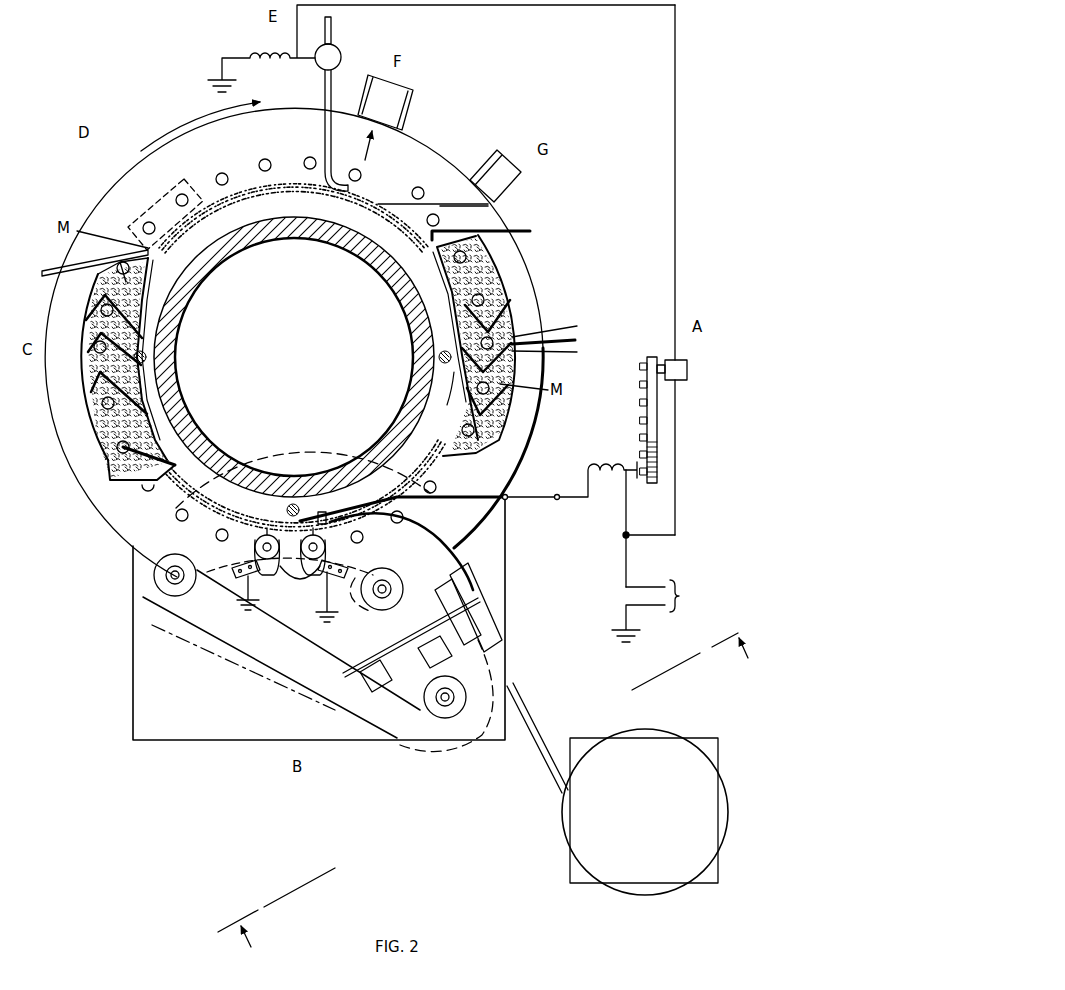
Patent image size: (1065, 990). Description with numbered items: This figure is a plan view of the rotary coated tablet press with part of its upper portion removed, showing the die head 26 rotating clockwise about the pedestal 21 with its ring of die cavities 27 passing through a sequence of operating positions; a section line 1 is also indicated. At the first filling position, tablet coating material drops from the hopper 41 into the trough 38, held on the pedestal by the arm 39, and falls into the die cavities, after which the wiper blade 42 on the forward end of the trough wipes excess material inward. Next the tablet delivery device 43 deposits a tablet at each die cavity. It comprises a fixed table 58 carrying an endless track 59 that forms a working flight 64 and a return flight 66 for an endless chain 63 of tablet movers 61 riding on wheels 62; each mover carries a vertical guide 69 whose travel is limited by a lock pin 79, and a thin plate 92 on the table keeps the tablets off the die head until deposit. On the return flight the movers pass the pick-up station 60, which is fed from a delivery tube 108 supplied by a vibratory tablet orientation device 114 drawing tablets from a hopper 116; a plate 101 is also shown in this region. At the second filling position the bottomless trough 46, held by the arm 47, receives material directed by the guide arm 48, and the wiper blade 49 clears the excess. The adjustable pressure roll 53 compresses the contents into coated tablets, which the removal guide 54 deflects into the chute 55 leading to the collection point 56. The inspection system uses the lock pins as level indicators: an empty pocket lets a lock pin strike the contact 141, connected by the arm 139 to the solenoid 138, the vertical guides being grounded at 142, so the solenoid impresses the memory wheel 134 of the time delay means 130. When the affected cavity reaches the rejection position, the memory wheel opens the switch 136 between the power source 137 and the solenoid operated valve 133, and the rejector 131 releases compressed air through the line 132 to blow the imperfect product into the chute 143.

The section line 1 is at (483, 781).
The pedestal 21 is at (252, 235).
The die head 26 is at (126, 185).
The die cavities 27 is at (148, 213).
The trough 38 is at (497, 268).
The arm 39 is at (514, 232).
The hopper 41 is at (566, 332).
The wiper blade 42 is at (467, 453).
The tablet delivery device 43 is at (255, 748).
The bottomless trough 46 is at (88, 320).
The arm 47 is at (55, 272).
The guide arm 48 is at (148, 470).
The wiper blade 49 is at (120, 253).
The adjustable pressure roll 53 is at (168, 198).
The removal guide 54 is at (444, 203).
The chute 55 is at (492, 172).
The collection point 56 is at (530, 134).
The table 58 is at (137, 678).
The endless track 59 is at (195, 605).
The pick-up station 60 is at (480, 612).
The tablet movers 61 is at (259, 541).
The wheels 62 is at (238, 568).
The endless chain 63 is at (297, 548).
The working flight 64 is at (203, 507).
The return flight 66 is at (444, 561).
The vertical guide 69 is at (333, 558).
The lock pin 79 is at (317, 510).
The thin plate 92 is at (432, 523).
The plate 101 is at (465, 602).
The delivery tube 108 is at (524, 716).
The vibratory tablet orientation device 114 is at (570, 867).
The hopper 116 is at (618, 885).
The time delay means 130 is at (728, 453).
The rejector 131 is at (345, 72).
The compressed air line 132 is at (334, 104).
The solenoid operated valve 133 is at (332, 30).
The memory wheel 134 is at (657, 421).
The switch 136 is at (684, 379).
The power source 137 is at (662, 587).
The solenoid 138 is at (612, 468).
The arm 139 is at (452, 499).
The contact 141 is at (330, 497).
The ground 142 is at (290, 608).
The chute 143 is at (397, 91).